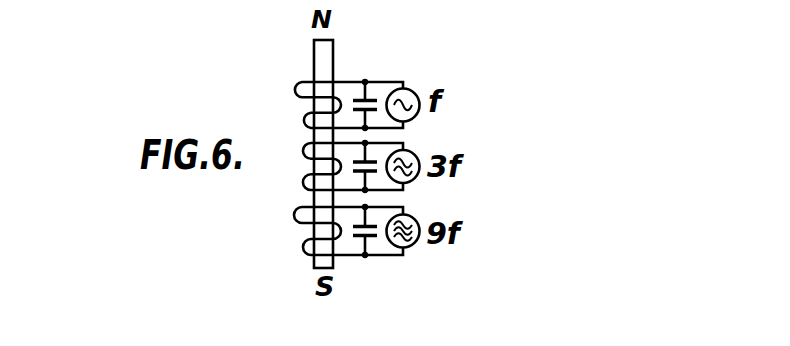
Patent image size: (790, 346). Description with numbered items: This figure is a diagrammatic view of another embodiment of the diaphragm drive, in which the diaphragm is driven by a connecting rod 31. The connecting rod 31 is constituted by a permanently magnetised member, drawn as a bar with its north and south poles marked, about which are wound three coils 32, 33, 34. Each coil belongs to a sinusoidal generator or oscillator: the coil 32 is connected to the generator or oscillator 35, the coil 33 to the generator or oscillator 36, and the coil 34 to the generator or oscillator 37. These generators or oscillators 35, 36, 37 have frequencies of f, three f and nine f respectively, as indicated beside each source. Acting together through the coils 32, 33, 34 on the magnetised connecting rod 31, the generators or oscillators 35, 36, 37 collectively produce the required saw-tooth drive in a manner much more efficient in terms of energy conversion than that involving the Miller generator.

The connecting rod 31 is at (320, 53).
The coil 32 is at (344, 81).
The coil 33 is at (388, 143).
The coil 34 is at (382, 256).
The sinusoidal generator or oscillator 35 is at (415, 92).
The sinusoidal generator or oscillator 36 is at (415, 179).
The sinusoidal generator or oscillator 37 is at (414, 245).